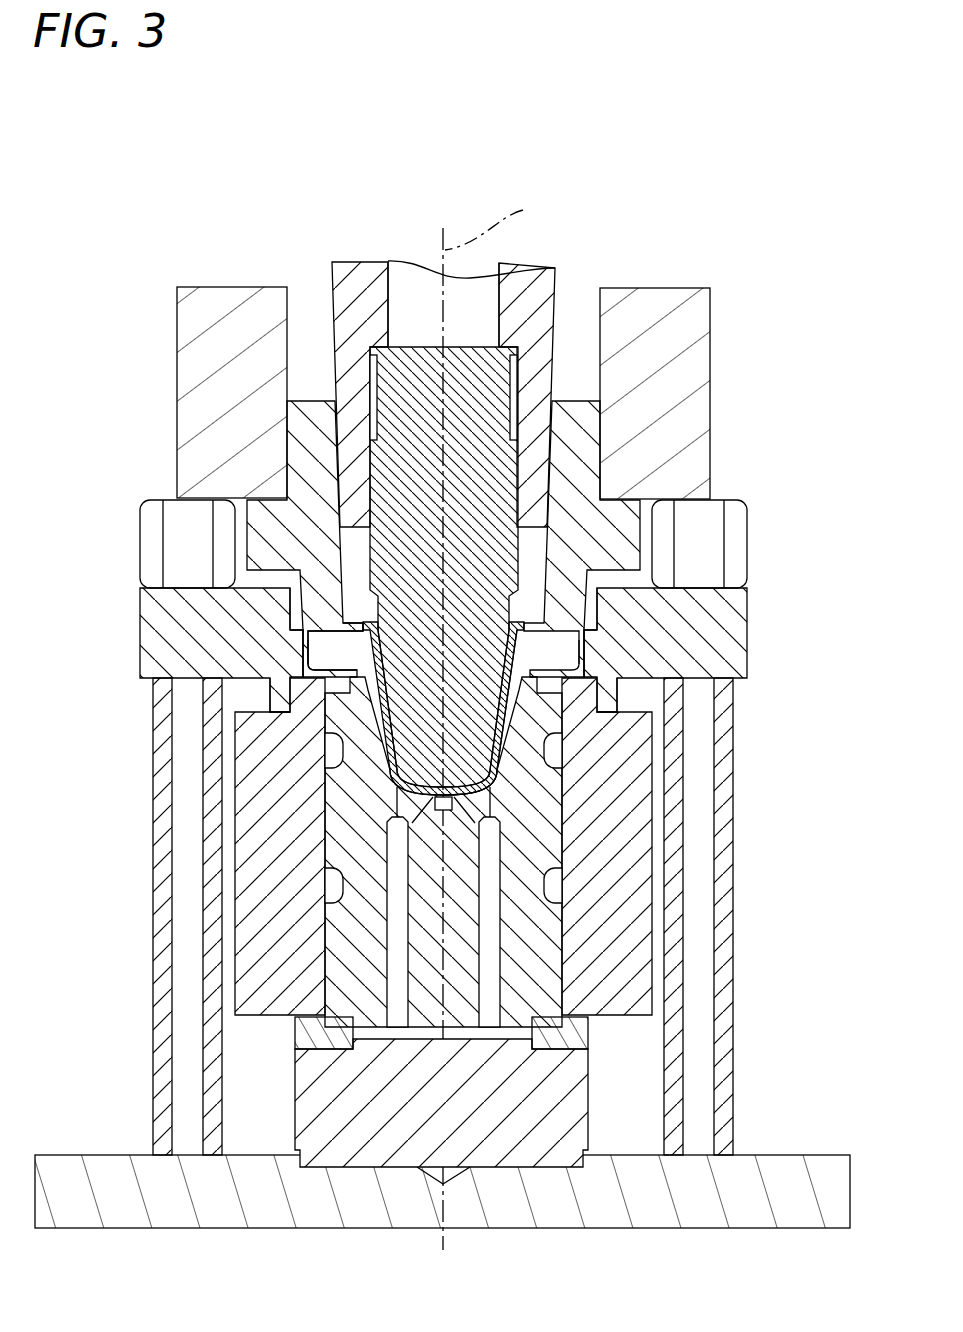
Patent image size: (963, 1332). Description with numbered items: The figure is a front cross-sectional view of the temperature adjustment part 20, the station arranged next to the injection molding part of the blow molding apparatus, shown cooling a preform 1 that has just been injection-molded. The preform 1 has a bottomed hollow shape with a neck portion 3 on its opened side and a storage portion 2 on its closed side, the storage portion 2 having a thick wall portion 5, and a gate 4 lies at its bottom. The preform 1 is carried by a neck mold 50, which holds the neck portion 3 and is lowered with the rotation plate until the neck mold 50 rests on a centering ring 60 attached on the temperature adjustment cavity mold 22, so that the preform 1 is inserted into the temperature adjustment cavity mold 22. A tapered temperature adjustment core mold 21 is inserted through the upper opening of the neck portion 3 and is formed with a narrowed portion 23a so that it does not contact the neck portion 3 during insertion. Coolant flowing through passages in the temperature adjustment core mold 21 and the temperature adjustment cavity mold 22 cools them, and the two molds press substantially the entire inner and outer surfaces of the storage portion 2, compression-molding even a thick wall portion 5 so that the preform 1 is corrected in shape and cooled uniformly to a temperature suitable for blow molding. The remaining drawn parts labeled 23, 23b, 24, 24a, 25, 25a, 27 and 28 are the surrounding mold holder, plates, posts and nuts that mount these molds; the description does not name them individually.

The preform 1 is at (505, 705).
The storage portion 2 is at (470, 788).
The neck portion 3 is at (590, 628).
The gate 4 is at (452, 803).
The wall portion 5 is at (498, 742).
The temperature adjustment part 20 is at (701, 227).
The temperature adjustment core mold 21 is at (400, 715).
The temperature adjustment cavity mold 22 is at (353, 752).
The core 23 is at (497, 488).
The narrowed portion 23a is at (352, 608).
The core groove 23b is at (374, 403).
The core holder 24 is at (540, 300).
The core holder inner wall 24a is at (396, 395).
The stripper plate 25 is at (157, 640).
The stripper plate inner edge 25a is at (296, 630).
The support post 27 is at (153, 921).
The nut 28 is at (147, 514).
The neck mold 50 is at (342, 652).
The centering ring 60 is at (338, 666).